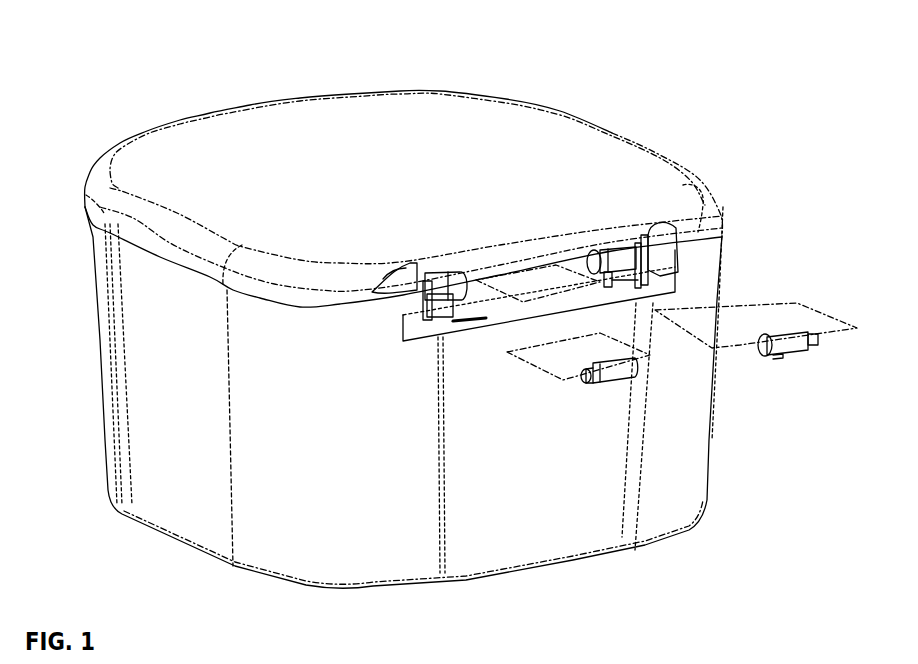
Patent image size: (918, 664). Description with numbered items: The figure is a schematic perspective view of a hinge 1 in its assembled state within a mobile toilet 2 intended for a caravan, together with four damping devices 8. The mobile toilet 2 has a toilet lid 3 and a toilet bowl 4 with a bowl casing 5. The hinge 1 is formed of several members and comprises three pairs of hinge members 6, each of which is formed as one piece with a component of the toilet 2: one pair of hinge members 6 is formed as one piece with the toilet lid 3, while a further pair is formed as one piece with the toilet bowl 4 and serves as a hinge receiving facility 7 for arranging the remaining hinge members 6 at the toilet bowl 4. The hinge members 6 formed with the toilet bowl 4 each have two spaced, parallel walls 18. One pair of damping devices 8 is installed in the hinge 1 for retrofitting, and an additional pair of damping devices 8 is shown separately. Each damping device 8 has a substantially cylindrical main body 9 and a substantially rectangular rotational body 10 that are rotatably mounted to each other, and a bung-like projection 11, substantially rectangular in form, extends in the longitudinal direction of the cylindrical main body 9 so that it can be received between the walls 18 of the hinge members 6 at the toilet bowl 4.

The hinge 1 is at (540, 300).
The mobile toilet 2 is at (253, 85).
The toilet lid 3 is at (185, 153).
The toilet bowl 4 is at (679, 243).
The bowl casing 5 is at (177, 395).
The hinge members 6 is at (407, 278).
The hinge receiving facility 7 is at (645, 257).
The damping device 8 is at (463, 269).
The cylindrical main body 9 is at (797, 343).
The rotational body 10 is at (818, 339).
The bung-like projection 11 is at (780, 357).
The parallel walls 18 is at (677, 275).